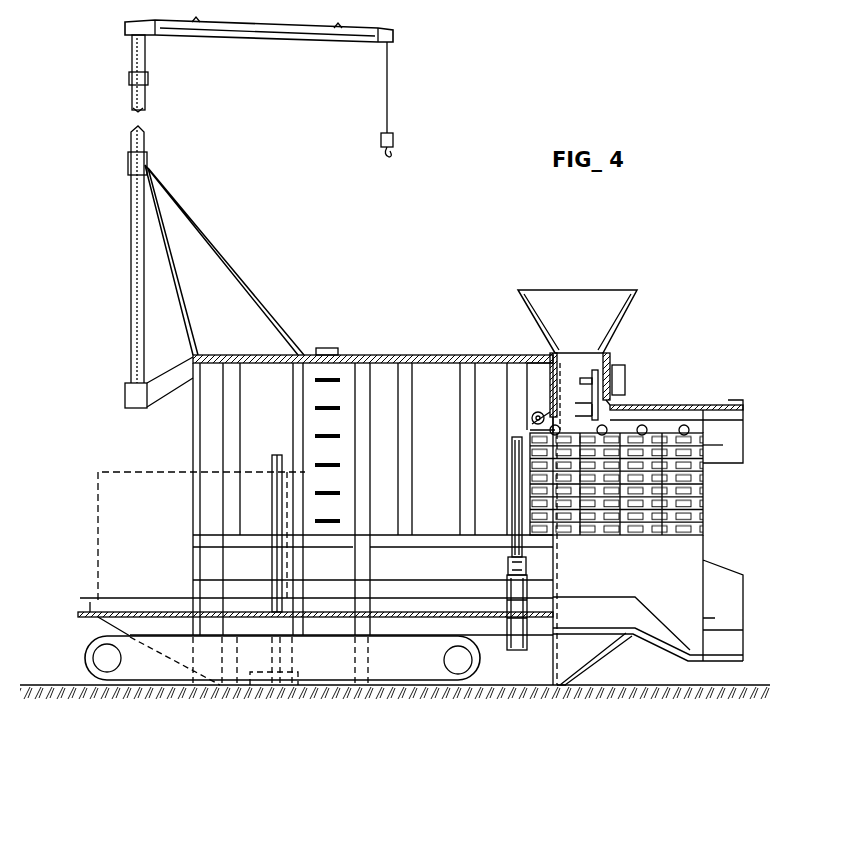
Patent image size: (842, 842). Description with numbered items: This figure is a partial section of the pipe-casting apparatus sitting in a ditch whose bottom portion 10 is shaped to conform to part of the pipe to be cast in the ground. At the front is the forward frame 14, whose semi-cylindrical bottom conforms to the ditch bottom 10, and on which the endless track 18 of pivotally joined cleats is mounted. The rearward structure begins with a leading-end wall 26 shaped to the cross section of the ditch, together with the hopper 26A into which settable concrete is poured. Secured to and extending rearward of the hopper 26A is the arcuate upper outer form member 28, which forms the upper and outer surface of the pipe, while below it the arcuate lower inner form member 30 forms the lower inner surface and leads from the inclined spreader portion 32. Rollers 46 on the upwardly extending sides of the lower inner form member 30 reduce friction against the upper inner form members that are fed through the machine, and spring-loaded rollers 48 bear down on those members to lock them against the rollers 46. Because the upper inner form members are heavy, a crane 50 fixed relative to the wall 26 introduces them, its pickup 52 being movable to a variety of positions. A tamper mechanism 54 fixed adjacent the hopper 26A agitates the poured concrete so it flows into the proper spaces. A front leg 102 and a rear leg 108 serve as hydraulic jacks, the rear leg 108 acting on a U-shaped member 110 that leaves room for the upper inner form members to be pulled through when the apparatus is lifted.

The bottom portion of the ditch 10 is at (612, 688).
The forward frame 14 is at (447, 445).
The track 18 is at (85, 658).
The wall 26 is at (549, 372).
The hopper 26A is at (625, 310).
The upper outer form member 28 is at (666, 405).
The lower inner form member 30 is at (722, 652).
The inclined spreader portion 32 is at (663, 650).
The rollers 46 is at (700, 488).
The spring-loaded rollers 48 is at (533, 413).
The crane 50 is at (131, 205).
The pickup 52 is at (392, 155).
The tamper mechanism 54 is at (594, 361).
The leg 102 is at (284, 455).
The leg 108 is at (514, 540).
The U-shaped member 110 is at (515, 617).